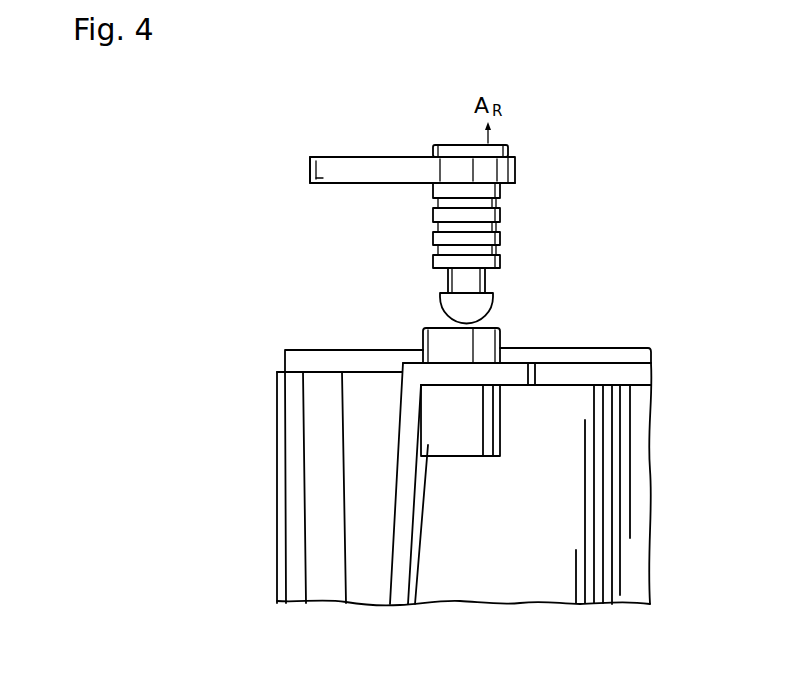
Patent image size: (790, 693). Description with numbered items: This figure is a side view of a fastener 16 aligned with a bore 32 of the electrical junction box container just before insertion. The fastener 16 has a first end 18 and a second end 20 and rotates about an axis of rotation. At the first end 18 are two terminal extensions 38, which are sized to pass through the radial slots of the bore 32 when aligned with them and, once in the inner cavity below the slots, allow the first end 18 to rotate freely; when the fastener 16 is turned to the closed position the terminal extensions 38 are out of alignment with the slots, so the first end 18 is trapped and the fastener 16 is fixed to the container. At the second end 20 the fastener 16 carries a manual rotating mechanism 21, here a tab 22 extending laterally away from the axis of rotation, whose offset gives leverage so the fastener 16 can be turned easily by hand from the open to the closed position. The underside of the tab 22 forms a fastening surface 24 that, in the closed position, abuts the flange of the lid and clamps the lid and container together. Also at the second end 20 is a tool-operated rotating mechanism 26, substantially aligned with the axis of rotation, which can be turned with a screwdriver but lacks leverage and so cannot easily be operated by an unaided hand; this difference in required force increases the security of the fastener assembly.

The fastener 16 is at (531, 164).
The first end 18 is at (493, 306).
The second end 20 is at (517, 182).
The manual rotating mechanism 21 is at (310, 179).
The tab 22 is at (310, 168).
The fastening surface 24 is at (354, 184).
The tool-operated rotating mechanism 26 is at (456, 145).
The bore 32 is at (440, 328).
The terminal extensions 38 is at (442, 292).